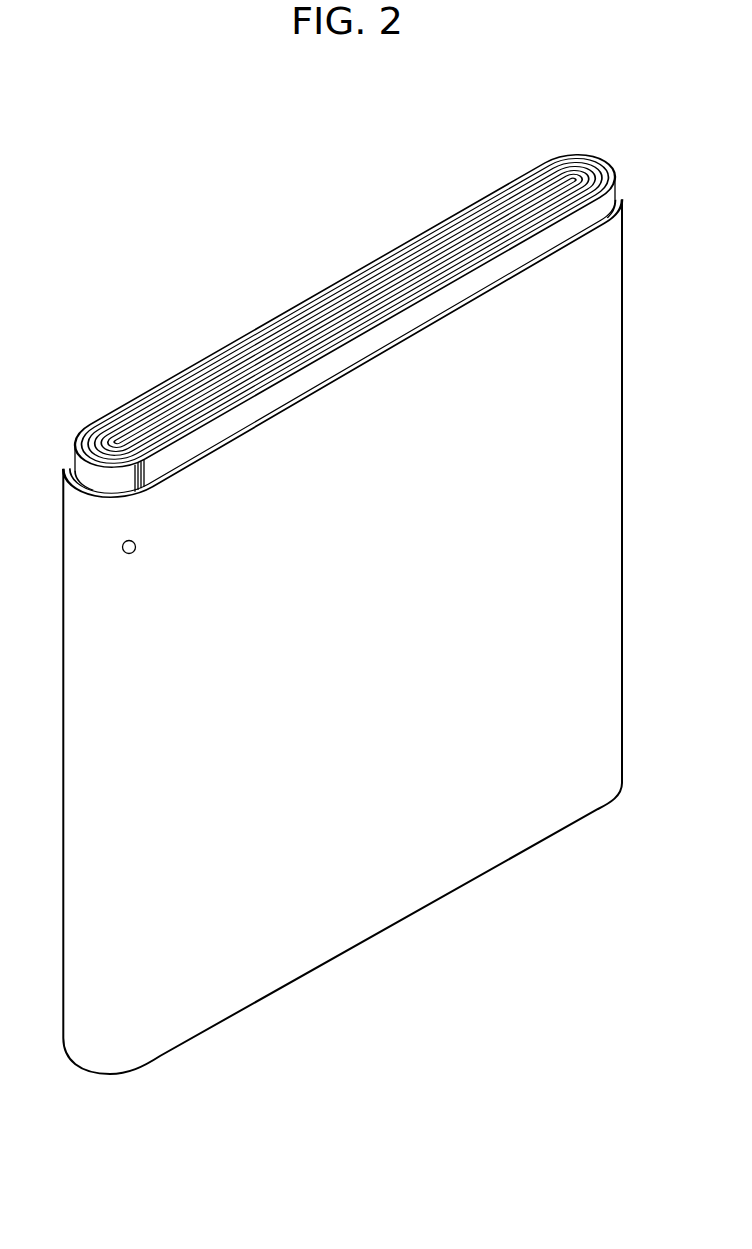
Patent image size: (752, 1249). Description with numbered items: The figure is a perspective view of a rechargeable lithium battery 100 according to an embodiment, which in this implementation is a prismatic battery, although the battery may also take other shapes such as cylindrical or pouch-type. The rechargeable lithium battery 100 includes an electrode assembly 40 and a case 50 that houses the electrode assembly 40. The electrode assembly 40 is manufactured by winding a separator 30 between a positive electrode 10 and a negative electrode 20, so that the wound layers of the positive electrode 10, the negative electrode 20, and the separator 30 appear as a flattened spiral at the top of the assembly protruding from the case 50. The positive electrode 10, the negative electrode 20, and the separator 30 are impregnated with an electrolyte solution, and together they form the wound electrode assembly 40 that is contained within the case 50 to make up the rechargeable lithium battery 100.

The rechargeable lithium battery 100 is at (323, 92).
The positive electrode 10 is at (614, 177).
The negative electrode 20 is at (576, 172).
The separator 30 is at (598, 172).
The electrode assembly 40 is at (357, 295).
The case 50 is at (606, 481).